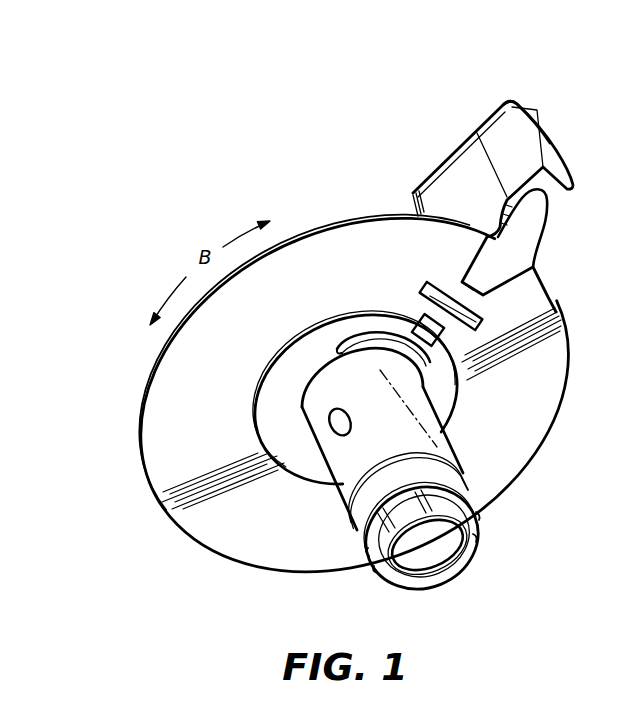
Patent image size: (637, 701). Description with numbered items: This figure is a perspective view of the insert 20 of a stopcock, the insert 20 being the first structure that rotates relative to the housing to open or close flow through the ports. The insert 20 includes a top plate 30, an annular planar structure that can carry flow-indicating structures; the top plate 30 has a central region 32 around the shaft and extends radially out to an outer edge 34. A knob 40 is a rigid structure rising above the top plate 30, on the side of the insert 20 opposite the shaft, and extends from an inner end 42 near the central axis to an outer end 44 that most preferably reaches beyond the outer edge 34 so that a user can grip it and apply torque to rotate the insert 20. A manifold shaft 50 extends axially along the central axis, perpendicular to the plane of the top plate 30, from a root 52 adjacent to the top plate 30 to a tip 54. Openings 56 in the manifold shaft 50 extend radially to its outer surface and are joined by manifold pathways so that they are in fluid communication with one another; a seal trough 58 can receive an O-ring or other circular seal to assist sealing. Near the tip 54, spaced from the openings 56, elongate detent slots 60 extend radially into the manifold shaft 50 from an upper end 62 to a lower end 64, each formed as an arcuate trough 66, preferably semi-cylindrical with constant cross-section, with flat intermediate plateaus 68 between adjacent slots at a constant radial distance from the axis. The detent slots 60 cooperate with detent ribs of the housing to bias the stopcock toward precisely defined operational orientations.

The insert 20 is at (120, 196).
The top plate 30 is at (303, 248).
The hub 32 is at (298, 390).
The outer edge 34 is at (150, 366).
The knob 40 is at (453, 170).
The inner end 42 is at (410, 193).
The outer end 44 is at (513, 101).
The manifold shaft 50 is at (437, 440).
The root 52 is at (330, 383).
The tip 54 is at (440, 560).
The opening 56 is at (342, 412).
The seal trough 58 is at (377, 490).
The detent slot 60 is at (482, 517).
The upper end 62 is at (373, 503).
The lower end 64 is at (381, 576).
The arcuate trough 66 is at (363, 533).
The intermediate plateau 68 is at (447, 490).